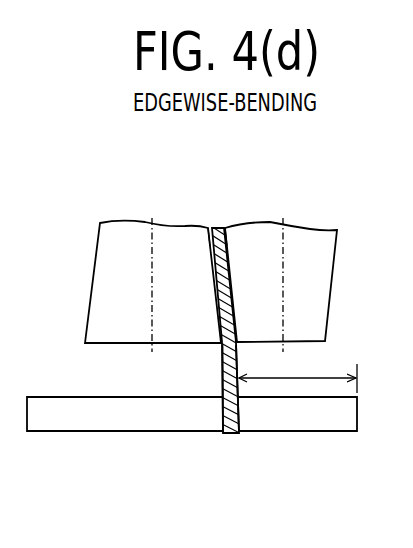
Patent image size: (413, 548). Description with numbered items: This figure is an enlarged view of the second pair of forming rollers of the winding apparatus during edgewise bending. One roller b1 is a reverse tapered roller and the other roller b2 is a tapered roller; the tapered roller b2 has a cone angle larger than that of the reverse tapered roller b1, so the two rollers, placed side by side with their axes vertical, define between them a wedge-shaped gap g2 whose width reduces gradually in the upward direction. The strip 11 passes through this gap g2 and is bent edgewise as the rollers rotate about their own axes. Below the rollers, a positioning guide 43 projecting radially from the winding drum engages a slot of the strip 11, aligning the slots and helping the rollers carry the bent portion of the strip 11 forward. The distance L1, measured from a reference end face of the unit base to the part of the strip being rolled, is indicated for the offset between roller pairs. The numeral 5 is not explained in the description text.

The reverse tapered roller b1 is at (180, 238).
The tapered roller b2 is at (312, 238).
The wedge-shaped gap g2 is at (215, 243).
The flat rectangular conductor wire 5 is at (218, 306).
The strip 11 is at (222, 372).
The positioning guide 43 is at (53, 402).
The distance L1 is at (298, 374).